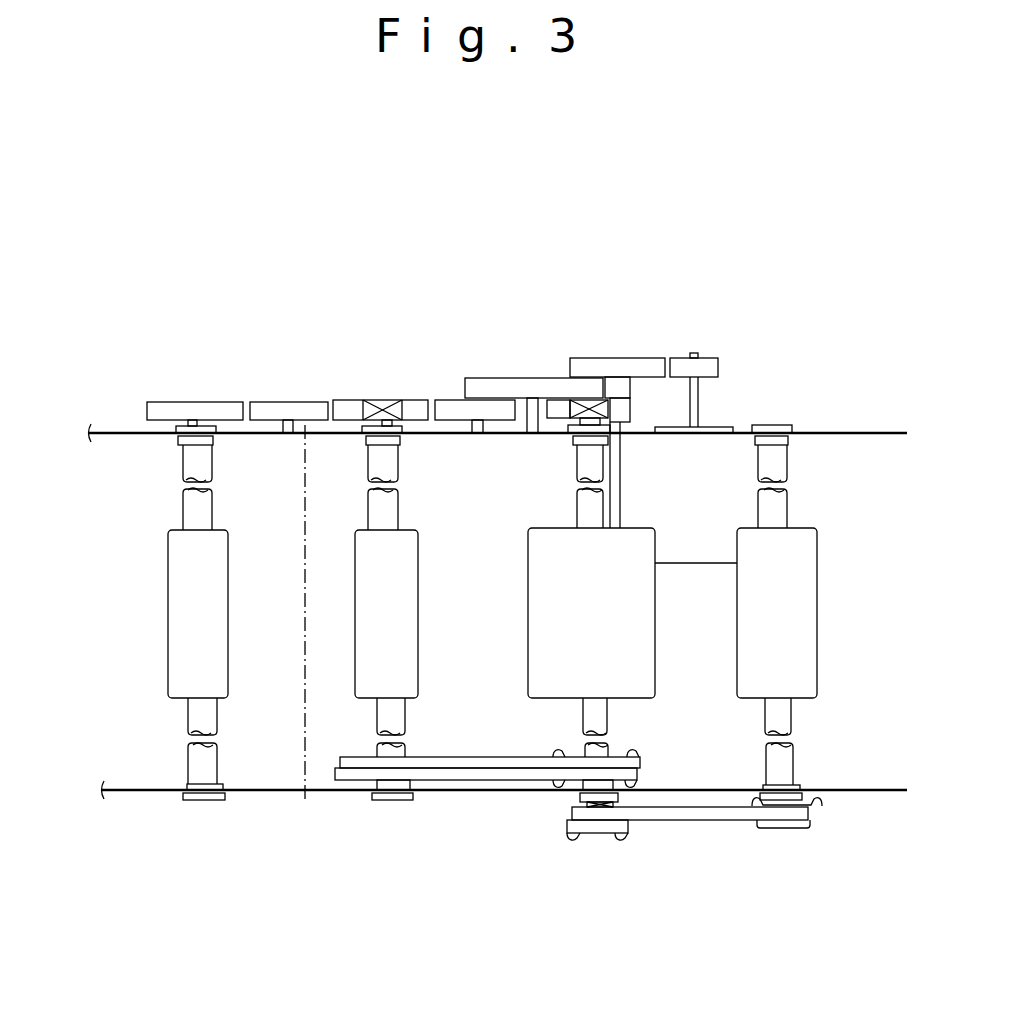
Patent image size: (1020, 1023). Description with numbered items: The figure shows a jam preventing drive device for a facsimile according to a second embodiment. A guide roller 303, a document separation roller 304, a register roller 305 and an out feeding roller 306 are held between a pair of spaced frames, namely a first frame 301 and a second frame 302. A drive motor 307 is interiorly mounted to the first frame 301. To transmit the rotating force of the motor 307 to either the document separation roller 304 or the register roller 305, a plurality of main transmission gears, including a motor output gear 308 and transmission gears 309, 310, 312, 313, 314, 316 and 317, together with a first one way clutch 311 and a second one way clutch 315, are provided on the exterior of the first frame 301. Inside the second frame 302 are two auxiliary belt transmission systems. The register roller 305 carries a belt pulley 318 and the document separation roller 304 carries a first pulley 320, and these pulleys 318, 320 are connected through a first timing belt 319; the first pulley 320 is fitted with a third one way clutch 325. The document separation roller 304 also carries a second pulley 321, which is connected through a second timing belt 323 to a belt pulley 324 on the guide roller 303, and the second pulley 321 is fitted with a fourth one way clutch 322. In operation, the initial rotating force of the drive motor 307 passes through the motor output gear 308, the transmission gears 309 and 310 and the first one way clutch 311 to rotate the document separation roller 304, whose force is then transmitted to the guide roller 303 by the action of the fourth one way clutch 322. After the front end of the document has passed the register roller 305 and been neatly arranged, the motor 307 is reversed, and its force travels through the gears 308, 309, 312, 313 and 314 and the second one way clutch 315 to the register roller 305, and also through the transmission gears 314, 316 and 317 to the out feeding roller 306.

The first frame 301 is at (92, 431).
The second frame 302 is at (140, 797).
The guide roller 303 is at (802, 623).
The document separation roller 304 is at (626, 623).
The register roller 305 is at (402, 610).
The out feeding roller 306 is at (187, 617).
The drive motor 307 is at (705, 501).
The motor output gear 308 is at (720, 357).
The transmission gear 309 is at (618, 357).
The transmission gear 310 is at (630, 412).
The first one way clutch 311 is at (573, 407).
The transmission gear 312 is at (502, 379).
The transmission gear 313 is at (448, 400).
The transmission gear 314 is at (417, 400).
The second one way clutch 315 is at (382, 400).
The transmission gear 316 is at (287, 402).
The transmission gear 317 is at (183, 402).
The belt pulley 318 is at (336, 776).
The first timing belt 319 is at (497, 773).
The first pulley 320 is at (560, 781).
The second pulley 321 is at (573, 831).
The fourth one way clutch 322 is at (610, 828).
The second timing belt 323 is at (703, 822).
The belt pulley 324 is at (793, 829).
The third one way clutch 325 is at (618, 755).